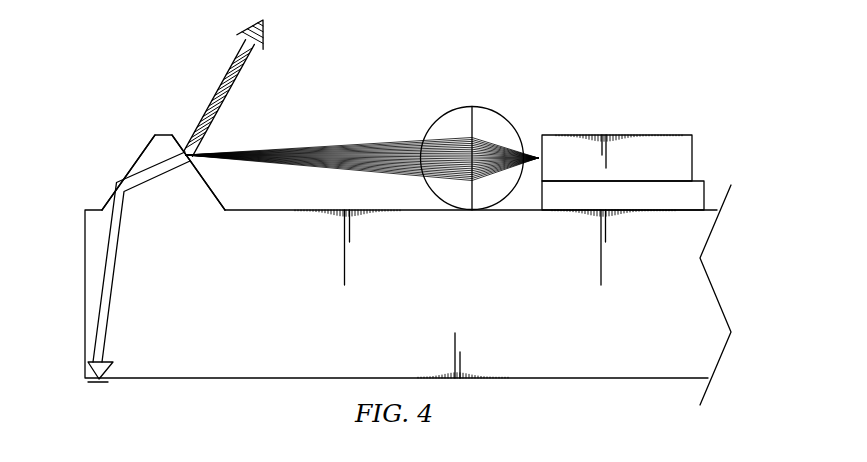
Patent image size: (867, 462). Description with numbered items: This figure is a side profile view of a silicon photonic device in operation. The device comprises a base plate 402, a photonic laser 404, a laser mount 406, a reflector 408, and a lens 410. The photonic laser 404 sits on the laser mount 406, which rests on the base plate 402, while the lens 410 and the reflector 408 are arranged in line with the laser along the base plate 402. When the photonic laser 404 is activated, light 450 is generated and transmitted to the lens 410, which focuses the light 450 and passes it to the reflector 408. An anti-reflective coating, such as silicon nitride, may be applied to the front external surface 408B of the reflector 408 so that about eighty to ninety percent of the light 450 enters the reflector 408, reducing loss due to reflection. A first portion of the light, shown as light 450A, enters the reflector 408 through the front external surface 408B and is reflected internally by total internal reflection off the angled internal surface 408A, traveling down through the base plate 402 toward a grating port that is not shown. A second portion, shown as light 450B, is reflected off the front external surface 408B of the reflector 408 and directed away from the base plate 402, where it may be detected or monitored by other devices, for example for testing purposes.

The base plate 402 is at (623, 362).
The photonic laser 404 is at (618, 135).
The laser mount 406 is at (635, 204).
The reflector 408 is at (158, 133).
The angled internal surface 408A is at (120, 182).
The front external surface 408B is at (210, 187).
The lens 410 is at (498, 112).
The light 450 is at (284, 145).
The light (first portion) 450A is at (155, 175).
The light (second portion) 450B is at (241, 41).